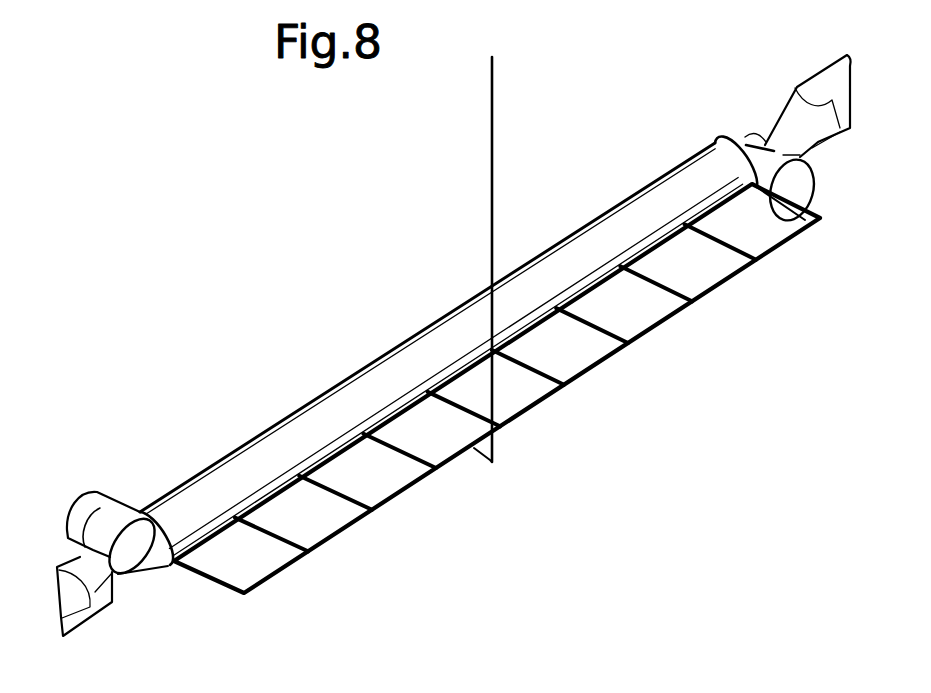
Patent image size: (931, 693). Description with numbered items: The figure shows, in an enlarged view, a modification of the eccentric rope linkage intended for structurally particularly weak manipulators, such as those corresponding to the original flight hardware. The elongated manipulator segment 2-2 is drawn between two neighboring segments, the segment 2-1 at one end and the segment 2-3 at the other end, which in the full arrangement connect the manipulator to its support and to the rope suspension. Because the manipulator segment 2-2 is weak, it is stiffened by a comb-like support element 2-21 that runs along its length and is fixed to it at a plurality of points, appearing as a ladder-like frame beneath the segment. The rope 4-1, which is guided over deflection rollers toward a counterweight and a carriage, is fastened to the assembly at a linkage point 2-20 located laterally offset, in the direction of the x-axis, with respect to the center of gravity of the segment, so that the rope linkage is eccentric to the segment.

The segment 2-1 is at (96, 592).
The manipulator segment 2-2 is at (302, 428).
The segment 2-3 is at (787, 103).
The linkage point 2-20 is at (477, 462).
The comb-like support element 2-21 is at (660, 326).
The rope 4-1 is at (493, 140).